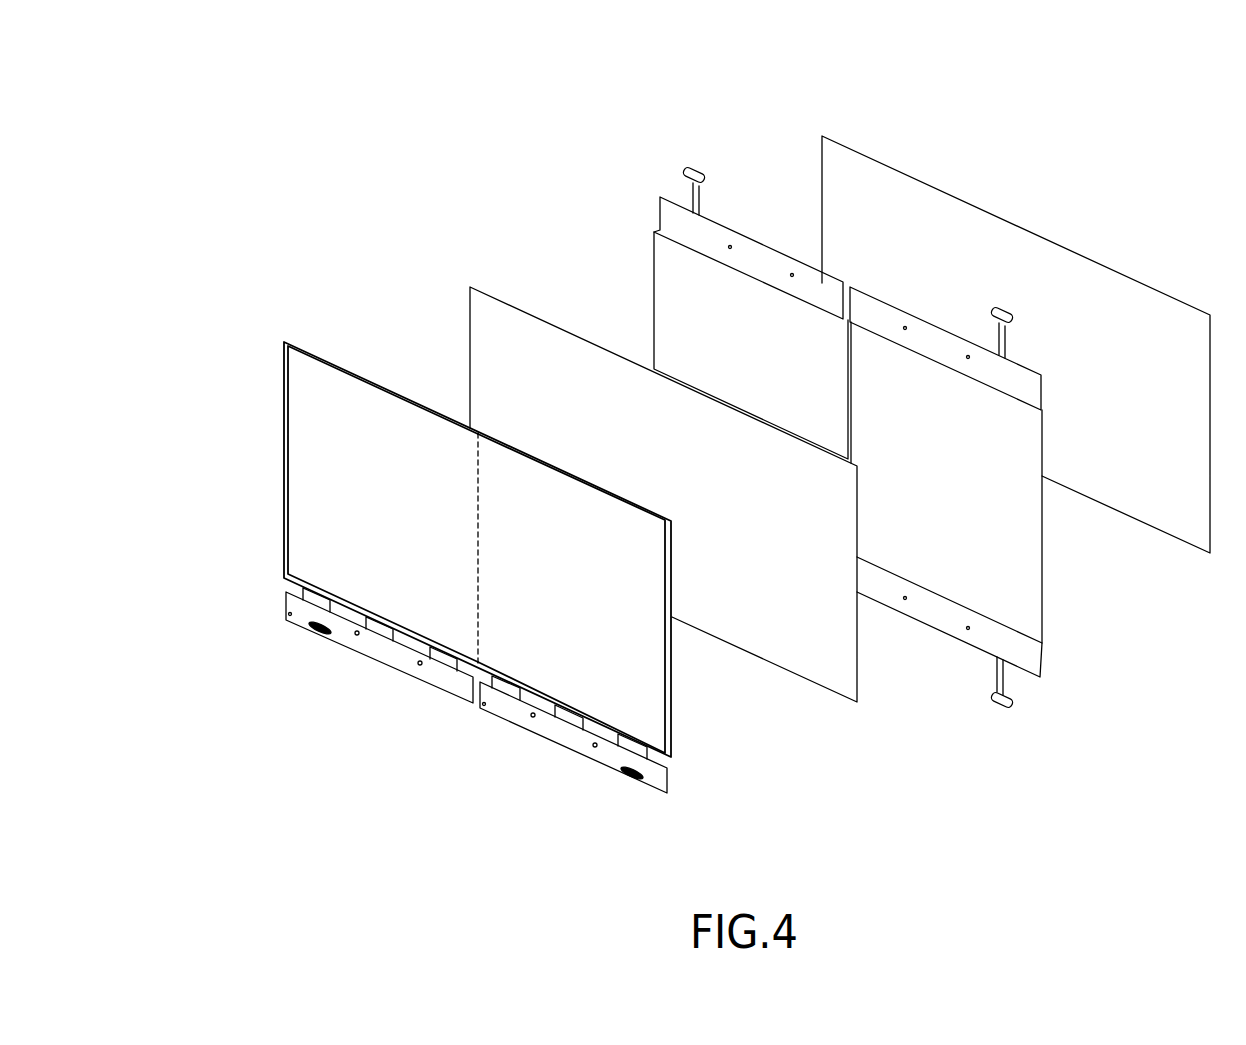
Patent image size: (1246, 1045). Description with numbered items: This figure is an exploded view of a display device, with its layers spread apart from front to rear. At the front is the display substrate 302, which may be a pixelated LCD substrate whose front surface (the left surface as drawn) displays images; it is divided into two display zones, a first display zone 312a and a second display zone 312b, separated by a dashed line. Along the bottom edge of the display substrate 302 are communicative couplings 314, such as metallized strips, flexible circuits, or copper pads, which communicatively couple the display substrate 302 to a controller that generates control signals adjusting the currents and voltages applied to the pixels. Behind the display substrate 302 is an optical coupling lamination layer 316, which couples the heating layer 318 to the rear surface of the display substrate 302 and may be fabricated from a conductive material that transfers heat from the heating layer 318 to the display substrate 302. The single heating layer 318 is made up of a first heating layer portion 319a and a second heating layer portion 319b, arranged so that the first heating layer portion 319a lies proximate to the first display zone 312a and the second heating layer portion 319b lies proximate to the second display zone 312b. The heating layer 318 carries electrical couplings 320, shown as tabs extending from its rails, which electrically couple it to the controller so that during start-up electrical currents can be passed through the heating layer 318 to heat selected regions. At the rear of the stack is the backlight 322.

The display substrate 302 is at (480, 549).
The first display zone 312a is at (310, 540).
The second display zone 312b is at (648, 690).
The communicative couplings 314 is at (447, 683).
The optical coupling lamination layer 316 is at (468, 330).
The heating layer 318 is at (653, 247).
The first heating layer portion 319a is at (693, 328).
The second heating layer portion 319b is at (1027, 548).
The electrical couplings 320 is at (940, 338).
The backlight 322 is at (820, 170).